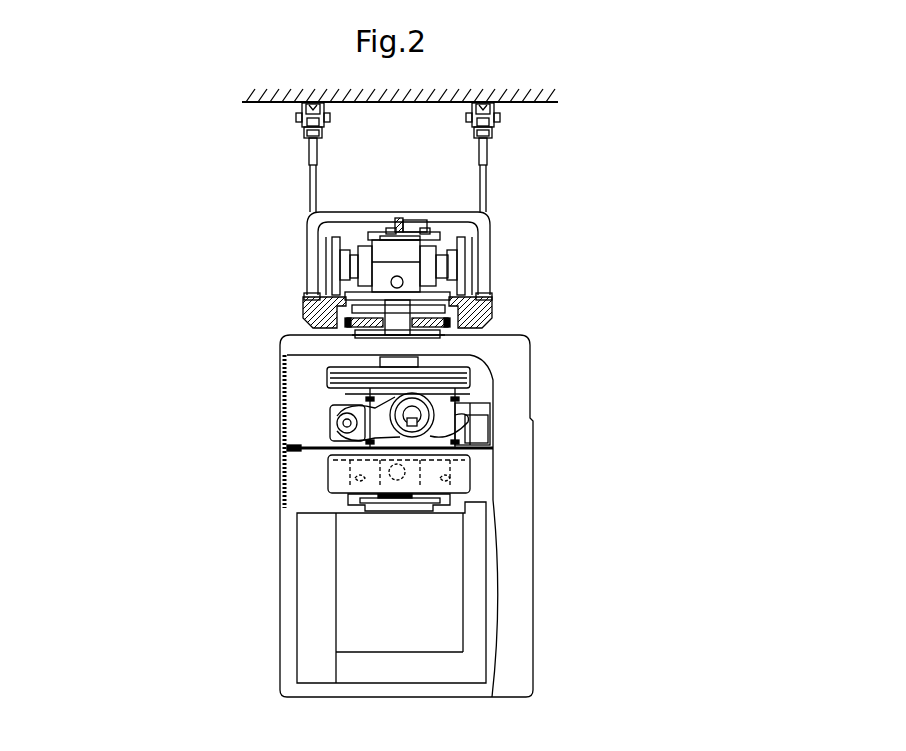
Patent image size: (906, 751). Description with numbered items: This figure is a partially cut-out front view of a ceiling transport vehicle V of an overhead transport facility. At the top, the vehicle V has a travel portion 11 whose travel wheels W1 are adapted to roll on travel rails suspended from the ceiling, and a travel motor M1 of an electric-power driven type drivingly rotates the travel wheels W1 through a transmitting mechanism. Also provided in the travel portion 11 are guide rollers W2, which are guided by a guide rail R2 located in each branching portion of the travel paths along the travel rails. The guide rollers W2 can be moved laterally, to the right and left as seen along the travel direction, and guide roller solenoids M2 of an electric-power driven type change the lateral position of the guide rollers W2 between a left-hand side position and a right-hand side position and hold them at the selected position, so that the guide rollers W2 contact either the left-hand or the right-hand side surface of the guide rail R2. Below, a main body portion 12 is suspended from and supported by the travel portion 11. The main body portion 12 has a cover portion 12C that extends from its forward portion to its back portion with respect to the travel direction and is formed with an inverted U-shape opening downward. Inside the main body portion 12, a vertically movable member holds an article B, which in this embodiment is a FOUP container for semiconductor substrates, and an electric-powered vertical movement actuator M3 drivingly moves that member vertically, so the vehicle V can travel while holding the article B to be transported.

The travel portion 11 is at (450, 224).
The main body portion 12 is at (540, 428).
The cover portion 12C is at (535, 502).
The article B is at (310, 597).
The ceiling transport vehicle V is at (479, 509).
The travel motor M1 is at (350, 242).
The guide roller solenoid M2 is at (447, 263).
The vertical movement actuator M3 is at (310, 413).
The travel wheels W1 is at (332, 248).
The guide rollers W2 is at (418, 225).
The guide rail R2 is at (394, 222).